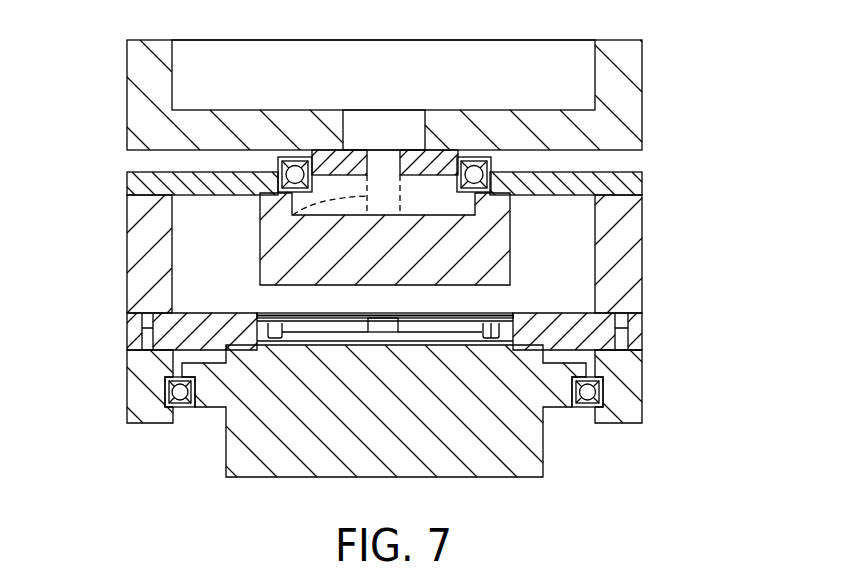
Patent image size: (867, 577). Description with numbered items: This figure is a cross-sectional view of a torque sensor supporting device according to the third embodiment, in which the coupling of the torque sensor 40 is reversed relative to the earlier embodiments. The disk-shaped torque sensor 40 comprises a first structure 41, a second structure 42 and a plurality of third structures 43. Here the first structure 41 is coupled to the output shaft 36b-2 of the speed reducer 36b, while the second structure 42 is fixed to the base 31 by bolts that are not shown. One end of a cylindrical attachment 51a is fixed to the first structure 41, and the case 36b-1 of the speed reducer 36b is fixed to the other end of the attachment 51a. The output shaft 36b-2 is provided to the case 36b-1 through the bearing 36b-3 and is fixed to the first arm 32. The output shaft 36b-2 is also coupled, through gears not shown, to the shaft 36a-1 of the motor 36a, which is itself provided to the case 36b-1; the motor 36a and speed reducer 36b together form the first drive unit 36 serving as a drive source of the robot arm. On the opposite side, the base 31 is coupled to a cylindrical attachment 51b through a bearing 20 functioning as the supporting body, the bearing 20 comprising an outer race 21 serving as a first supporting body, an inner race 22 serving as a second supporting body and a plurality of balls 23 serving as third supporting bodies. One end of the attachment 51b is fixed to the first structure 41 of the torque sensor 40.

The bearing 20 is at (461, 413).
The outer race 21 is at (603, 403).
The inner race 22 is at (603, 382).
The balls 23 is at (596, 393).
The base 31 is at (535, 450).
The first arm 32 is at (630, 65).
The first drive unit 36 is at (401, 175).
The motor 36a is at (450, 239).
The shaft 36a-1 is at (293, 221).
The speed reducer 36b is at (381, 140).
The case 36b-1 is at (128, 185).
The output shaft 36b-2 is at (313, 149).
The bearing 36b-3 is at (277, 163).
The torque sensor 40 is at (442, 301).
The first structure 41 is at (612, 328).
The second structure 42 is at (558, 315).
The third structures 43 is at (522, 324).
The cylindrical attachment 51a is at (140, 258).
The cylindrical attachment 51b is at (140, 390).